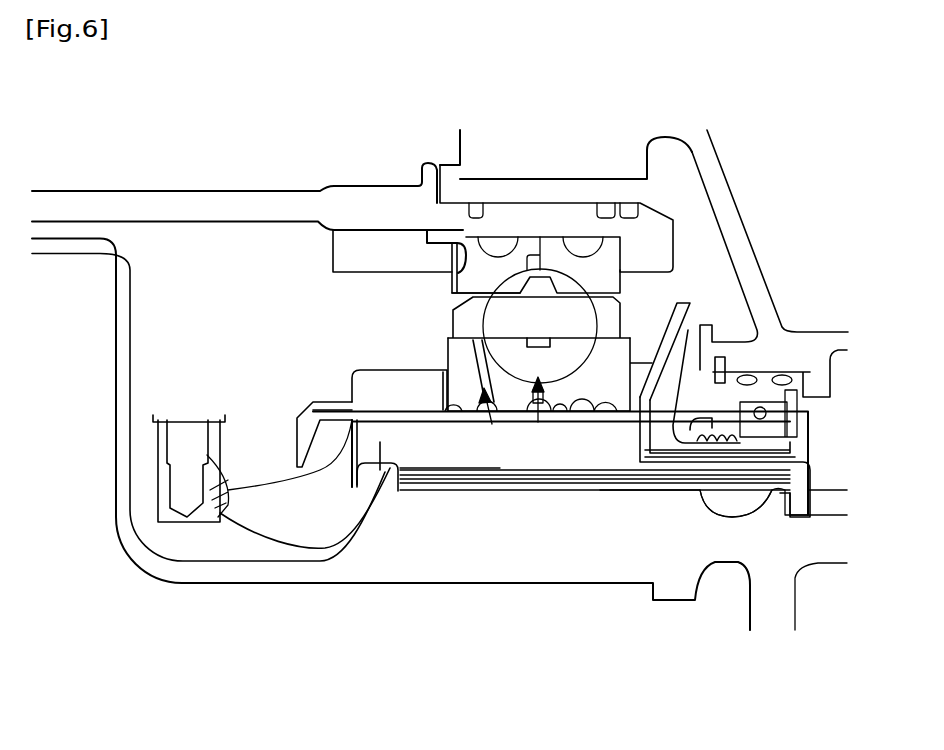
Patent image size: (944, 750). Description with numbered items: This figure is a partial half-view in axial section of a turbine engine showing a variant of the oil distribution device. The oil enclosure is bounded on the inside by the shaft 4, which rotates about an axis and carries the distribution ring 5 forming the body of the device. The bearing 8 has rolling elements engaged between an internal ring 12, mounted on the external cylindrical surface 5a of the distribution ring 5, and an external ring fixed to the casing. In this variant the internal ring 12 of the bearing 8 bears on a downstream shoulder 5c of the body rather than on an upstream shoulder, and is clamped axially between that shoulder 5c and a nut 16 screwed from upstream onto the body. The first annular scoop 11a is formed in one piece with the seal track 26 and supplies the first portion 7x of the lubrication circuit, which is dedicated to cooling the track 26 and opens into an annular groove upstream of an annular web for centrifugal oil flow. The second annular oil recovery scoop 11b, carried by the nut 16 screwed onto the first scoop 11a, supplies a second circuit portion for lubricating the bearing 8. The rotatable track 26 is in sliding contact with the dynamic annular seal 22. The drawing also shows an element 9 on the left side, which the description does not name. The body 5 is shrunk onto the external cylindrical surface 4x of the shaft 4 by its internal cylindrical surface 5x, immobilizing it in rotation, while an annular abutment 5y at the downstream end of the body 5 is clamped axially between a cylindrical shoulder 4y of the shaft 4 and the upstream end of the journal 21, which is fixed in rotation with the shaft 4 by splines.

The shaft 4 is at (302, 567).
The external cylindrical surface of the shaft 4x is at (520, 490).
The cylindrical shoulder of the shaft 4y is at (770, 503).
The distribution ring 5 is at (573, 485).
The external cylindrical surface of the distribution ring 5a is at (594, 385).
The downstream shoulder 5c is at (640, 372).
The internal cylindrical surface of the body 5x is at (495, 480).
The annular abutment 5y is at (792, 515).
The first portion of the lubrication circuit 7x is at (623, 477).
The bearing 8 is at (443, 297).
The cup 9 is at (167, 485).
The first annular scoop 11a is at (380, 470).
The second annular oil recovery scoop 11b is at (313, 402).
The internal ring 12 is at (613, 355).
The block 16 is at (378, 380).
The journal 21 is at (835, 503).
The dynamic annular seal 22 is at (817, 422).
The seal track 26 is at (730, 492).